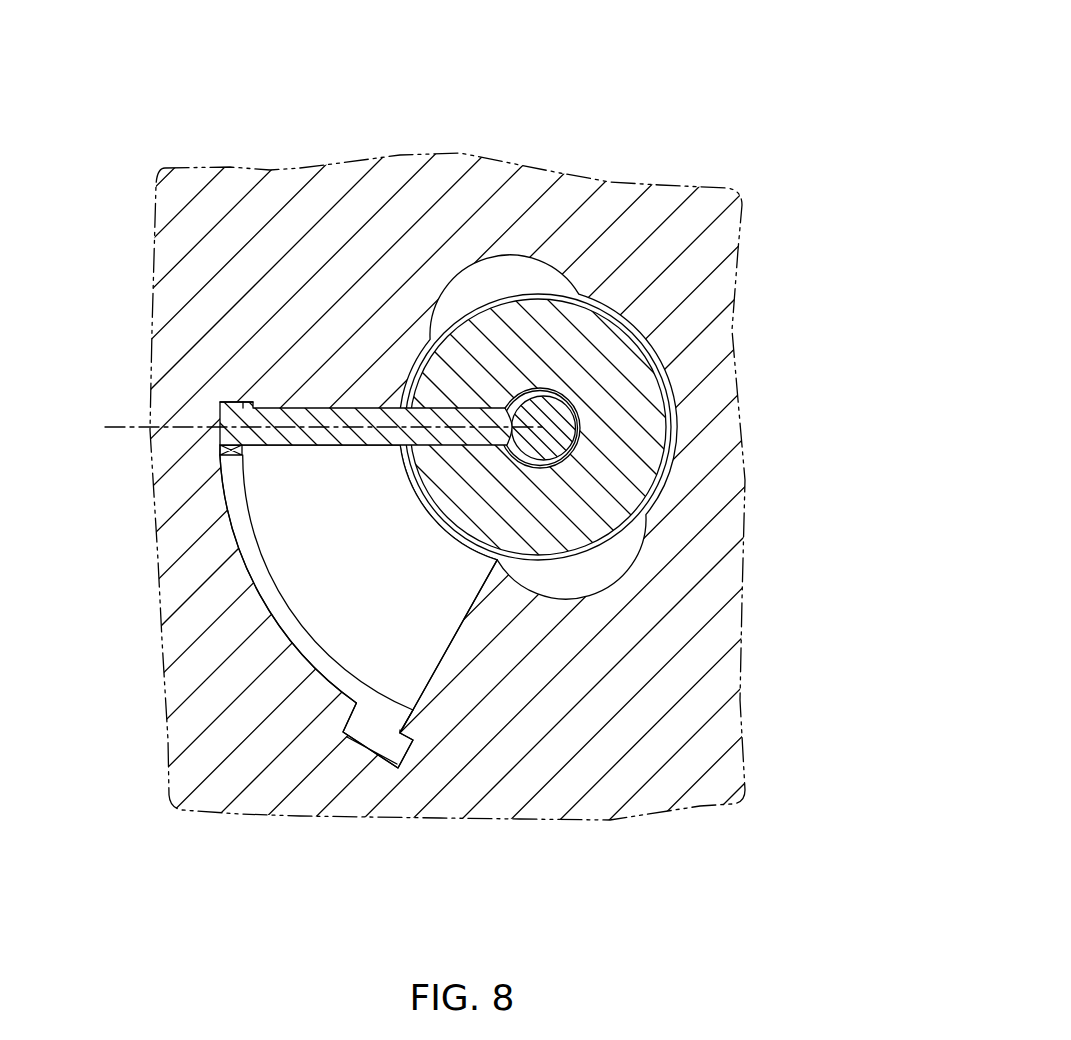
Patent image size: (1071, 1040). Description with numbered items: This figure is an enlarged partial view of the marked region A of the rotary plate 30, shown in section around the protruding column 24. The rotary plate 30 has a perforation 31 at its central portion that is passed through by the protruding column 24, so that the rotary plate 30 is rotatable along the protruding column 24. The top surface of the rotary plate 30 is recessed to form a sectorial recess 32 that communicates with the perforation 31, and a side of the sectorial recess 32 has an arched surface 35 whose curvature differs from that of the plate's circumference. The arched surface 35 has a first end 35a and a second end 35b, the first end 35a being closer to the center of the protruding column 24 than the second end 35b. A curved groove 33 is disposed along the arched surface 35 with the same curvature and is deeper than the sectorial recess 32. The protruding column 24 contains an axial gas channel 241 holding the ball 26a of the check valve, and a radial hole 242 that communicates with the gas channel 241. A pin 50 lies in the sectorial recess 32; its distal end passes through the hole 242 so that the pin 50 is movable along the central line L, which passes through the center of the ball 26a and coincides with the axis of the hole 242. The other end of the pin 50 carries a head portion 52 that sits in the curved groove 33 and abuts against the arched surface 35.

The rotary plate 30 is at (633, 820).
The perforation 31 is at (655, 488).
The sectorial recess 32 is at (357, 606).
The curved groove 33 is at (275, 590).
The arched surface 35 is at (243, 560).
The first end 35a is at (222, 412).
The second end 35b is at (350, 719).
The pin 50 is at (266, 418).
The head portion 52 is at (222, 450).
The protruding column 24 is at (642, 385).
The gas channel 241 is at (512, 405).
The hole 242 is at (422, 341).
The ball 26a is at (551, 407).
The central line L is at (312, 428).
The marked region A is at (656, 114).